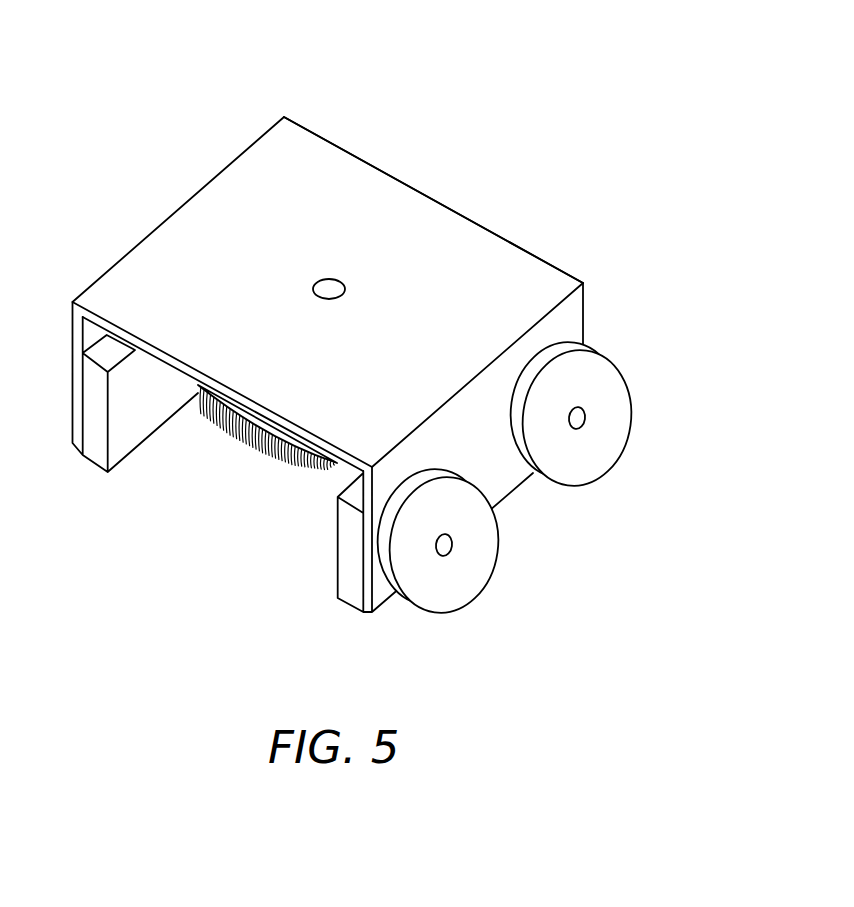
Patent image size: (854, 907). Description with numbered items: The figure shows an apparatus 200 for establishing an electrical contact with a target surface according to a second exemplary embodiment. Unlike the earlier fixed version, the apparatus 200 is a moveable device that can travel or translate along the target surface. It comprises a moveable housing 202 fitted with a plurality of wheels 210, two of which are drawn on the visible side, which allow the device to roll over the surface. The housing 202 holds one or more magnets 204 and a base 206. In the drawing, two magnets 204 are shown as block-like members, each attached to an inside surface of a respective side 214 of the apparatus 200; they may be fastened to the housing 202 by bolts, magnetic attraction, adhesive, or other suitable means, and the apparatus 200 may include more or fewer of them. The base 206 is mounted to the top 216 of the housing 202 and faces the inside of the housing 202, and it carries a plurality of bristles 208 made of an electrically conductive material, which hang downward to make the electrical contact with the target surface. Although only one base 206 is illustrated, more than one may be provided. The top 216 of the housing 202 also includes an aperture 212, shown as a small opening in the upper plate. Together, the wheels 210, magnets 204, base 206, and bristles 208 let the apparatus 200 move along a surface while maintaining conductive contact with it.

The apparatus 200 is at (366, 344).
The moveable housing 202 is at (183, 200).
The magnets 204 is at (95, 453).
The base 206 is at (243, 412).
The bristles 208 is at (238, 447).
The wheels 210 is at (482, 572).
The aperture 212 is at (333, 277).
The side 214 is at (578, 323).
The top 216 is at (463, 230).